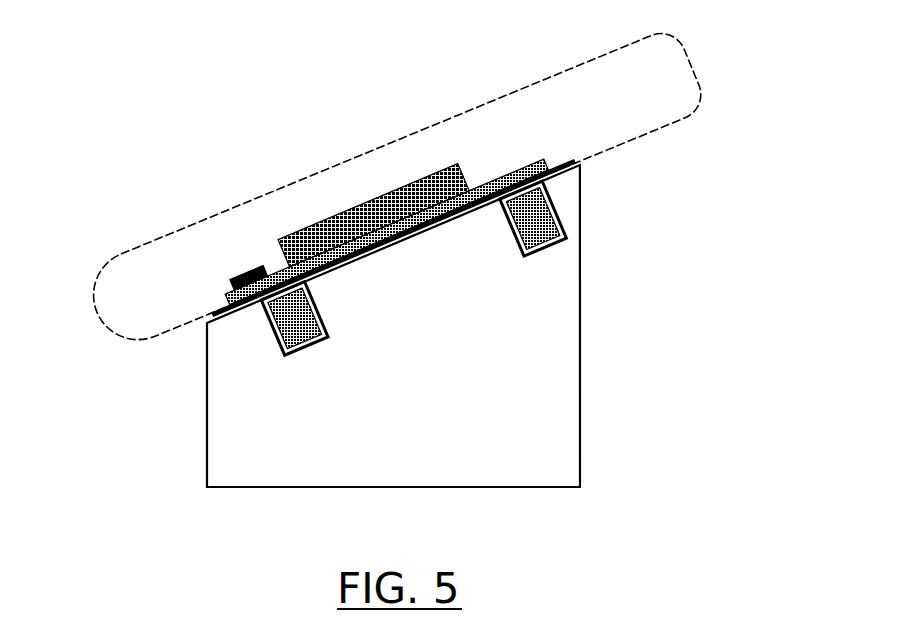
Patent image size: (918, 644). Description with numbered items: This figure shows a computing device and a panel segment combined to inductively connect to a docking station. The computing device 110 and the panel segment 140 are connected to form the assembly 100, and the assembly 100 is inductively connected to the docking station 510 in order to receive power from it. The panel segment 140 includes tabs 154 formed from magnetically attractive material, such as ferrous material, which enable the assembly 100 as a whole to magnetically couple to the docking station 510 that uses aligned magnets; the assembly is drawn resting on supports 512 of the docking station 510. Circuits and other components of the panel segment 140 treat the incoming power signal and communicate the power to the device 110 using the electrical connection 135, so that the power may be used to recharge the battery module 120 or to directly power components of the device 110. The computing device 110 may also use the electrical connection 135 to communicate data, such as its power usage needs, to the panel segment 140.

The assembly 100 is at (178, 167).
The computing device 110 is at (620, 98).
The battery module 120 is at (367, 203).
The electrical connection 135 is at (243, 281).
The panel segment 140 is at (522, 171).
The tabs 154 is at (490, 206).
The docking station 510 is at (380, 404).
The support blocks 512 is at (326, 343).